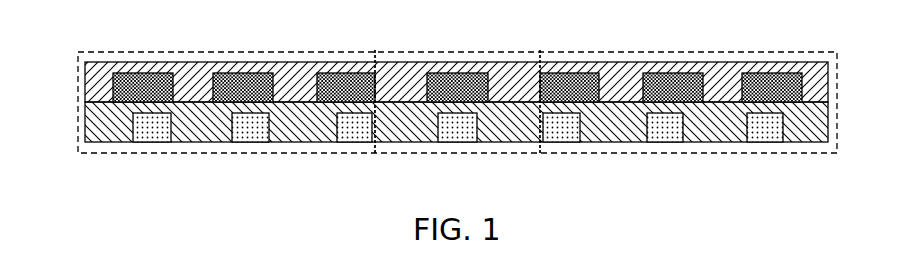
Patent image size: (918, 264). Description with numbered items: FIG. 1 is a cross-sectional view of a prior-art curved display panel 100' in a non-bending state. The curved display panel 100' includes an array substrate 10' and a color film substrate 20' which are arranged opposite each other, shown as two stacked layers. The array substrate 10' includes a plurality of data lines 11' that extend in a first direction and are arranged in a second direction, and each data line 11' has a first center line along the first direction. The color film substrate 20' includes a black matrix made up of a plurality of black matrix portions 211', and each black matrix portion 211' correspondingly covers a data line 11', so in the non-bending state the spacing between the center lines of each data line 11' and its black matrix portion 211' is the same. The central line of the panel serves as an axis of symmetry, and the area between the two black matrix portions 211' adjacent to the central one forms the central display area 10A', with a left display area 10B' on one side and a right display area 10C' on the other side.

The curved display panel 100' is at (447, 76).
The color film substrate 20' is at (480, 82).
The array substrate 10' is at (480, 122).
The black matrix portion 211' is at (457, 61).
The data line 11' is at (458, 154).
The central display area 10A' is at (457, 126).
The left display area 10B' is at (314, 126).
The right display area 10C' is at (619, 126).